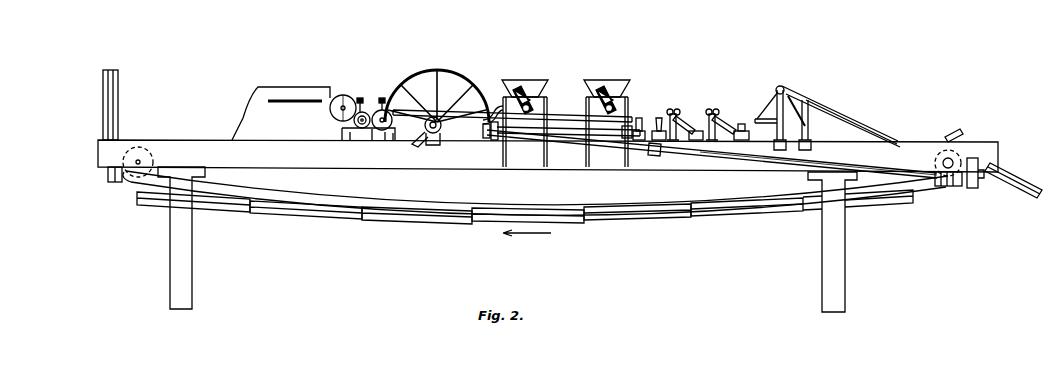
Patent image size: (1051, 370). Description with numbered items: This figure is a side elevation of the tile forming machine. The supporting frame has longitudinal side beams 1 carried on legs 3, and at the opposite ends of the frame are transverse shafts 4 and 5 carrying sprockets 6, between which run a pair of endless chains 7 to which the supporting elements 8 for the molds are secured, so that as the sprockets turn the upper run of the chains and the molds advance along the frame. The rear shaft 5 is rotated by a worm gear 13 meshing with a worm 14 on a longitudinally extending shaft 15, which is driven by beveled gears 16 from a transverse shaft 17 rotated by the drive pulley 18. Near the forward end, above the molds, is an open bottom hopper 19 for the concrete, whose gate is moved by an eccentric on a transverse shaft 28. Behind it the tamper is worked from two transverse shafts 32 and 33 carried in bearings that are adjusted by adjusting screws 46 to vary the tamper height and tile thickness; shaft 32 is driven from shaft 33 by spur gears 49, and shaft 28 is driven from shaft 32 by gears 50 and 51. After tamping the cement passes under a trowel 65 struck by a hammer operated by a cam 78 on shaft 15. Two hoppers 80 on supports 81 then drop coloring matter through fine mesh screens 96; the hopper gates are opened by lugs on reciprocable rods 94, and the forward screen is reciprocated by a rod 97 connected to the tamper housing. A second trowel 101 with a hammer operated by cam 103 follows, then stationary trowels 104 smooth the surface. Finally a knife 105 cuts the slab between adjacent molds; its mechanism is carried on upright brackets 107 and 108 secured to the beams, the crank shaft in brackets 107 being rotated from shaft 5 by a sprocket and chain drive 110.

The longitudinal side beams 1 is at (283, 166).
The legs 3 is at (193, 255).
The transverse shaft 4 is at (142, 162).
The rear shaft 5 is at (968, 160).
The sprockets 6 is at (150, 148).
The endless chains 7 is at (524, 209).
The supporting elements 8 is at (103, 114).
The worm gear 13 is at (943, 162).
The worm 14 is at (956, 190).
The longitudinally extending shaft 15 is at (762, 162).
The beveled gears 16 is at (431, 146).
The transverse shaft 17 is at (417, 144).
The drive pulley 18 is at (455, 78).
The hopper 19 is at (296, 96).
The transverse shaft 28 is at (336, 117).
The transverse shaft 32 is at (346, 134).
The transverse shaft 33 is at (390, 142).
The adjusting screws 46 is at (361, 97).
The spur gears 49 is at (379, 134).
The gear 50 is at (366, 110).
The gear 51 is at (345, 96).
The trowel 65 is at (484, 139).
The cam 78 is at (493, 141).
The hoppers 80 is at (528, 82).
The supports 81 is at (549, 99).
The reciprocable rods 94 is at (441, 110).
The fine mesh screens 96 is at (531, 137).
The rod 97 is at (488, 110).
The trowel 101 is at (656, 117).
The operating cam 103 is at (660, 160).
The stationary trowels 104 is at (700, 120).
The knife 105 is at (748, 124).
The upright brackets 107 is at (770, 114).
The upright bracket 108 is at (784, 129).
The sprocket and chain drive 110 is at (846, 111).